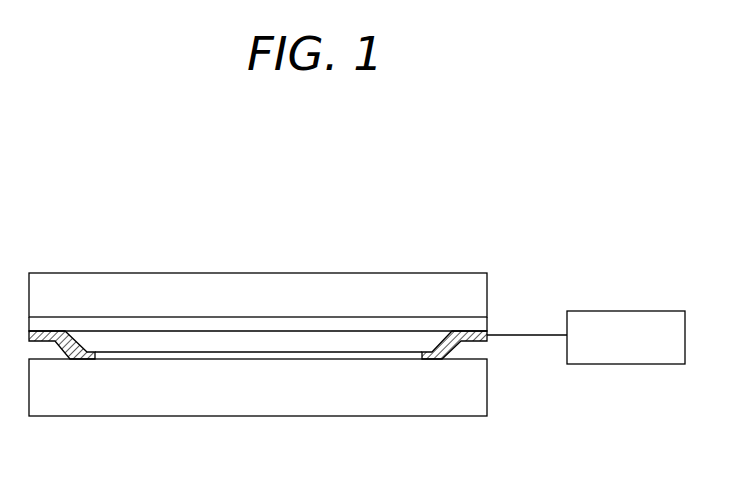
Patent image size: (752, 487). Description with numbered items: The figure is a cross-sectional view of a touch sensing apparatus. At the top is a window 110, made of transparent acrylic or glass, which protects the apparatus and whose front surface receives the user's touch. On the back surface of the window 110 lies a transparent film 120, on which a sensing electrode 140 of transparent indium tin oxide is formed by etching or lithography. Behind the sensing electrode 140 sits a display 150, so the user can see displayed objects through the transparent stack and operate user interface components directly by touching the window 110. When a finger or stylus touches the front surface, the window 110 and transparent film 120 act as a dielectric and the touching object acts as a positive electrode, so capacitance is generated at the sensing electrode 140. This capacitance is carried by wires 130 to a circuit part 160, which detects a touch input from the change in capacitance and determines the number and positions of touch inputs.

The window 110 is at (202, 285).
The transparent film 120 is at (343, 323).
The wires 130 is at (432, 361).
The sensing electrode 140 is at (253, 340).
The display 150 is at (482, 391).
The circuit part 160 is at (672, 311).